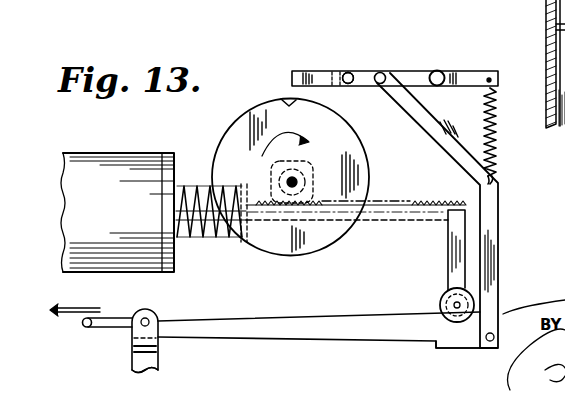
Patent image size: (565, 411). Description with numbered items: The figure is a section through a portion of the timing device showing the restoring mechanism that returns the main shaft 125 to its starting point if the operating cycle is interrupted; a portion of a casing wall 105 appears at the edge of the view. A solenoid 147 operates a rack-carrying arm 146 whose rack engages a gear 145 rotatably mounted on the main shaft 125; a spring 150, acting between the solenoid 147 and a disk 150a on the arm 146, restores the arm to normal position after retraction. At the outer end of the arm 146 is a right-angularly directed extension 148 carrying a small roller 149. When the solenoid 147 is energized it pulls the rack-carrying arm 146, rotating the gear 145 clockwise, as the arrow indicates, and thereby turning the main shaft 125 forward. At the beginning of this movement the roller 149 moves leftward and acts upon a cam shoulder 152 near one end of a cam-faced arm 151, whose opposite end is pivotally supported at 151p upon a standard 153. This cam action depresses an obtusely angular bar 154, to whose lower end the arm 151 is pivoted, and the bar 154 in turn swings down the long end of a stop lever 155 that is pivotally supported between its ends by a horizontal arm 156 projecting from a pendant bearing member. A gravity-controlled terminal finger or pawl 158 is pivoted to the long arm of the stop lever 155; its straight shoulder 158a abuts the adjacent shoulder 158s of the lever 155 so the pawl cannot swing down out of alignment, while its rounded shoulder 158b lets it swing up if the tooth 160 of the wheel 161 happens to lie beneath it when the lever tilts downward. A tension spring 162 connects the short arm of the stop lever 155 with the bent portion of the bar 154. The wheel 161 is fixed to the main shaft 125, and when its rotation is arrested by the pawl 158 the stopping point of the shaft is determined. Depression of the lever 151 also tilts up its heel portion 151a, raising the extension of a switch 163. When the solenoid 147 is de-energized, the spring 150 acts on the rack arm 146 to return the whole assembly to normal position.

The solenoid 147 is at (140, 154).
The spring 150 is at (193, 236).
The disk 150a is at (245, 243).
The wheel 161 is at (258, 120).
The tooth 160 is at (291, 104).
The main shaft 125 is at (290, 181).
The gear 145 is at (304, 144).
The rack-carrying arm 146 is at (405, 222).
The extension 148 is at (447, 268).
The roller 149 is at (440, 301).
The cam-faced arm 151 is at (288, 316).
The cam shoulder 152 is at (438, 330).
The pivot 151p is at (150, 317).
The heel portion 151a is at (108, 329).
The standard 153 is at (160, 366).
The switch 163 is at (59, 327).
The pawl 158 is at (310, 72).
The shoulder of lever 158s is at (362, 70).
The rounded shoulder 158b is at (352, 72).
The straight shoulder 158a is at (348, 86).
The stop lever 155 is at (408, 70).
The horizontal arm 156 is at (440, 70).
The obtusely angular bar 154 is at (499, 222).
The tension spring 162 is at (495, 136).
The plate 105 is at (556, 30).